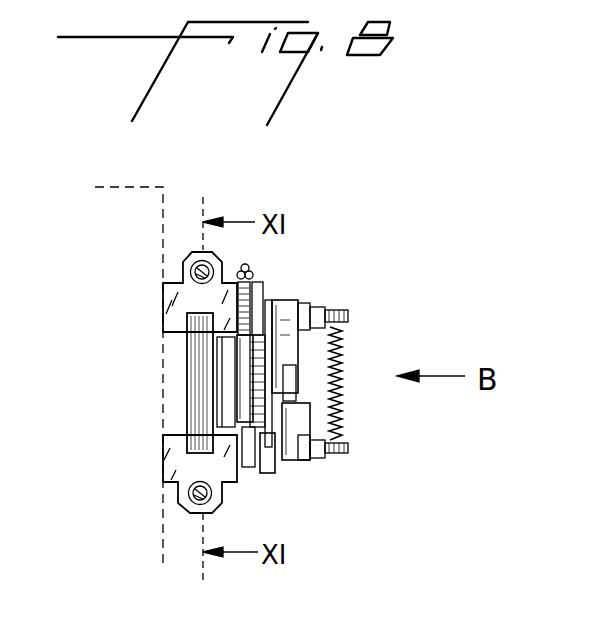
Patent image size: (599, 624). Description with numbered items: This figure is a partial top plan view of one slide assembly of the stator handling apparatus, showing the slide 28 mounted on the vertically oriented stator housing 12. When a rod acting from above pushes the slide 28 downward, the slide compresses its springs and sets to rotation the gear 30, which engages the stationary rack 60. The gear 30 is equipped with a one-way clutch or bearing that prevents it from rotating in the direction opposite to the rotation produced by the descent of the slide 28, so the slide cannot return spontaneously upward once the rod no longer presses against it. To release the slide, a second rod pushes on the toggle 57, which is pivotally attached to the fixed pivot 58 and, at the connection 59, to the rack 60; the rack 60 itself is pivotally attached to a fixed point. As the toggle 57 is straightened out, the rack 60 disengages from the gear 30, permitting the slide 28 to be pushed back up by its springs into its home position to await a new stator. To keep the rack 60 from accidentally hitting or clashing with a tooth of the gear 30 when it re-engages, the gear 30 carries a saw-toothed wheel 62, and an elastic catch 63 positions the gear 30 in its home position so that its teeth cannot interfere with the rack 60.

The stator housing 12 is at (137, 190).
The slide 28 is at (188, 385).
The rack 60 is at (238, 442).
The gear 30 is at (250, 440).
The elastic catch 63 is at (268, 278).
The fixed pivot 58 is at (320, 303).
The saw-toothed wheel 62 is at (267, 368).
The toggle 57 is at (300, 415).
The pivot connection to rack 59 is at (317, 460).